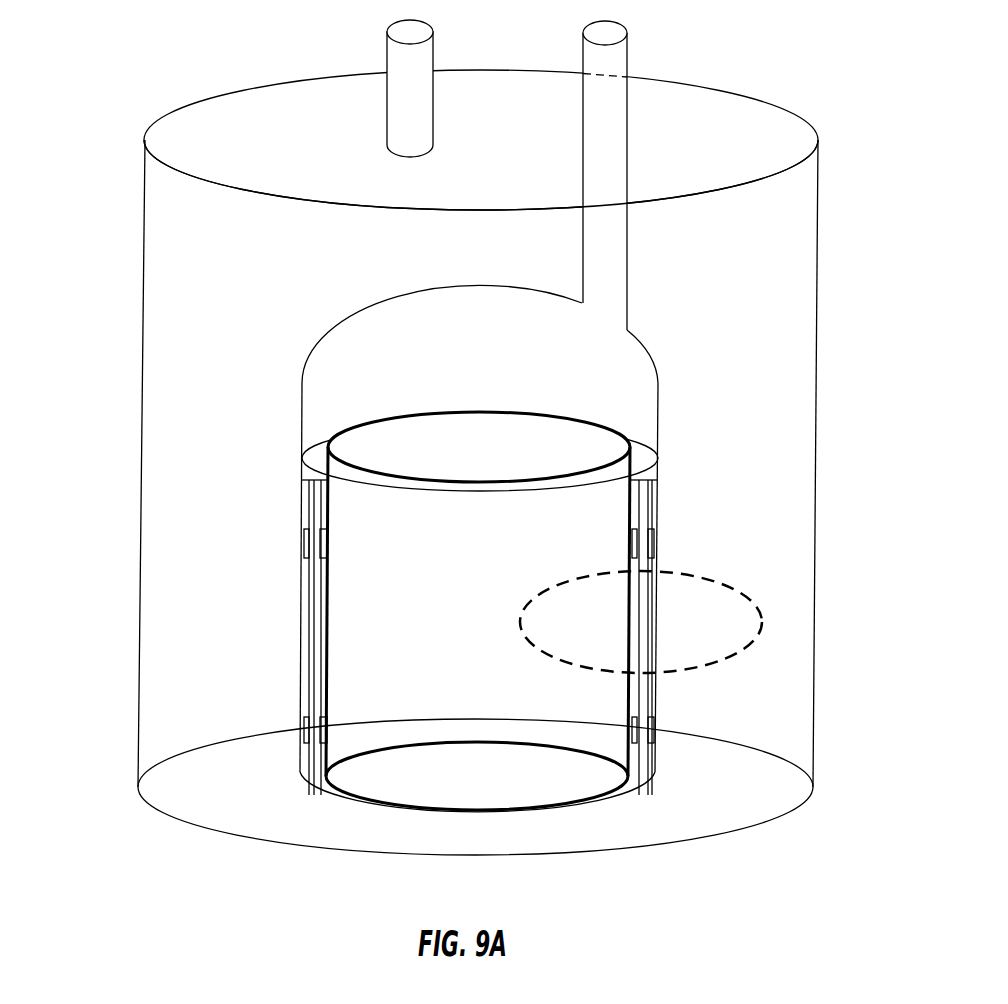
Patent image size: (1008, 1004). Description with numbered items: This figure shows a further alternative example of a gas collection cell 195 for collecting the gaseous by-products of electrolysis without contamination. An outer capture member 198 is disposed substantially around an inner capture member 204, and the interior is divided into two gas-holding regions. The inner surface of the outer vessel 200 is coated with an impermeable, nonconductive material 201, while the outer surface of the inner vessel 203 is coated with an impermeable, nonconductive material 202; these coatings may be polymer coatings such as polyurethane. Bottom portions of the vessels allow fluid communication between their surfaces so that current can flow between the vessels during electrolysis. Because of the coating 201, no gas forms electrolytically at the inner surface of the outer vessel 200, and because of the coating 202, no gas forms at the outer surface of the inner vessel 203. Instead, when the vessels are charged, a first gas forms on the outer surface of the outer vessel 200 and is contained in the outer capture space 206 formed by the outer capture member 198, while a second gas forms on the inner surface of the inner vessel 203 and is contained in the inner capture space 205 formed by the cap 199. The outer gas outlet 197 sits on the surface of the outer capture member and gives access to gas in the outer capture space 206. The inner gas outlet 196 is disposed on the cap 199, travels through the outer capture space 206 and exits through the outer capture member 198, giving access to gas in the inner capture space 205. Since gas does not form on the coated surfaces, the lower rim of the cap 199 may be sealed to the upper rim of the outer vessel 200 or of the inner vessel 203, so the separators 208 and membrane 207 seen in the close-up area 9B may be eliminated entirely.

The gas collection cell 195 is at (464, 427).
The inner gas outlet 196 is at (583, 133).
The outer gas outlet 197 is at (387, 132).
The outer capture member 198 is at (743, 96).
The cap 199 is at (634, 337).
The outer vessel 200 is at (658, 513).
The impermeable, nonconductive material 201 is at (655, 660).
The impermeable, nonconductive material 202 is at (330, 581).
The inner vessel 203 is at (330, 537).
The inner capture member 204 is at (495, 438).
The inner capture space 205 is at (643, 363).
The outer capture space 206 is at (805, 208).
The membrane 207 is at (643, 618).
The separators 208 is at (655, 725).
The close-up area 9B is at (562, 582).